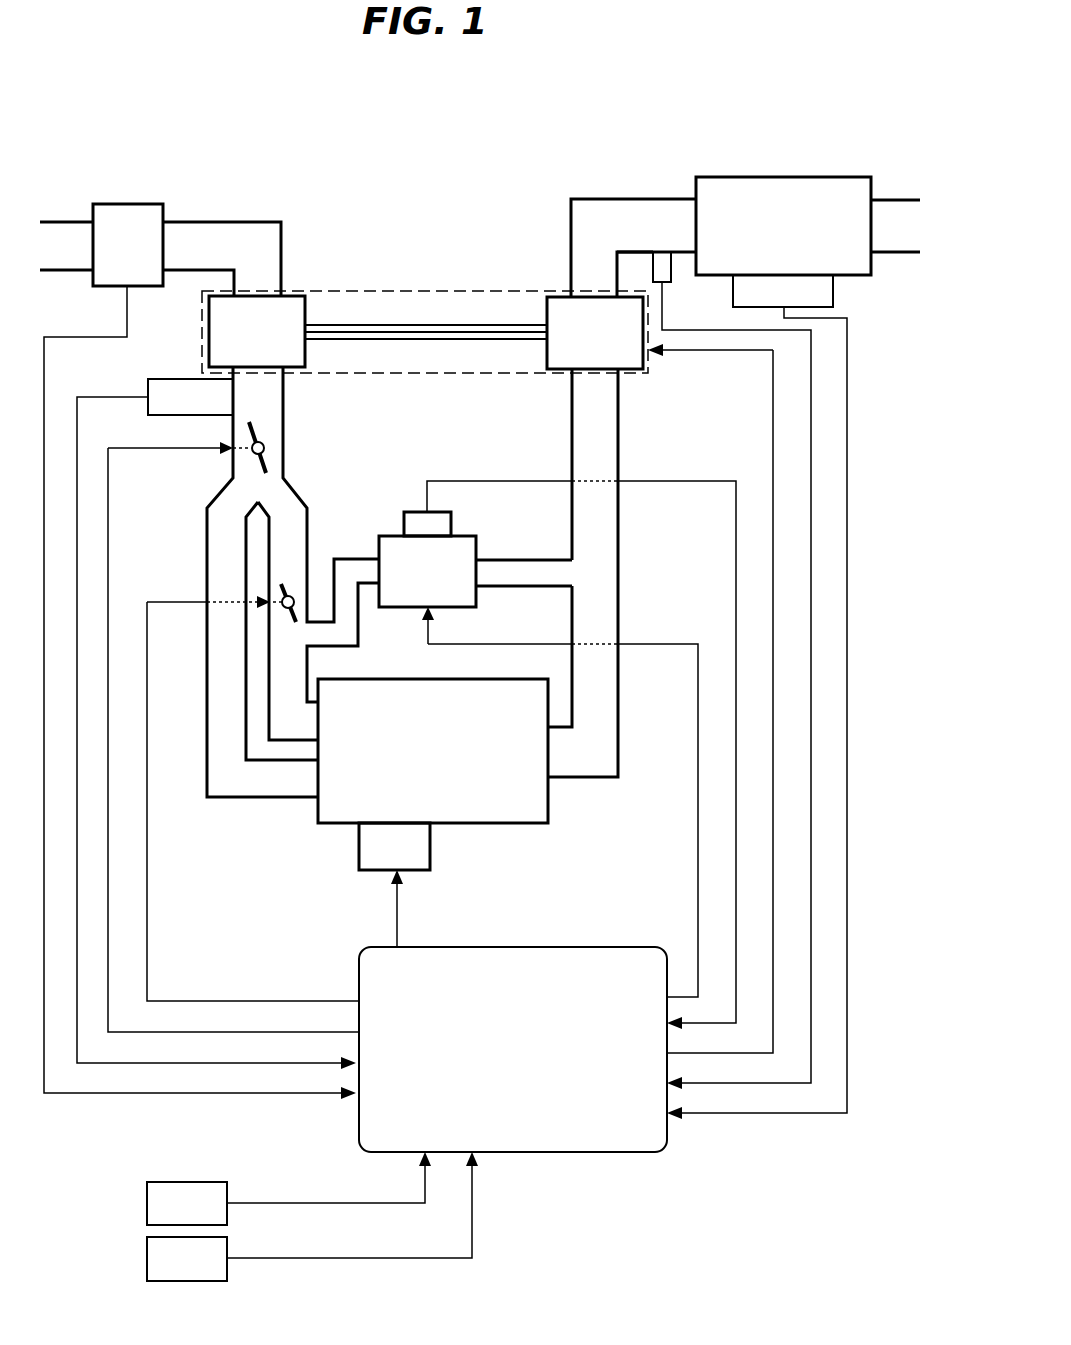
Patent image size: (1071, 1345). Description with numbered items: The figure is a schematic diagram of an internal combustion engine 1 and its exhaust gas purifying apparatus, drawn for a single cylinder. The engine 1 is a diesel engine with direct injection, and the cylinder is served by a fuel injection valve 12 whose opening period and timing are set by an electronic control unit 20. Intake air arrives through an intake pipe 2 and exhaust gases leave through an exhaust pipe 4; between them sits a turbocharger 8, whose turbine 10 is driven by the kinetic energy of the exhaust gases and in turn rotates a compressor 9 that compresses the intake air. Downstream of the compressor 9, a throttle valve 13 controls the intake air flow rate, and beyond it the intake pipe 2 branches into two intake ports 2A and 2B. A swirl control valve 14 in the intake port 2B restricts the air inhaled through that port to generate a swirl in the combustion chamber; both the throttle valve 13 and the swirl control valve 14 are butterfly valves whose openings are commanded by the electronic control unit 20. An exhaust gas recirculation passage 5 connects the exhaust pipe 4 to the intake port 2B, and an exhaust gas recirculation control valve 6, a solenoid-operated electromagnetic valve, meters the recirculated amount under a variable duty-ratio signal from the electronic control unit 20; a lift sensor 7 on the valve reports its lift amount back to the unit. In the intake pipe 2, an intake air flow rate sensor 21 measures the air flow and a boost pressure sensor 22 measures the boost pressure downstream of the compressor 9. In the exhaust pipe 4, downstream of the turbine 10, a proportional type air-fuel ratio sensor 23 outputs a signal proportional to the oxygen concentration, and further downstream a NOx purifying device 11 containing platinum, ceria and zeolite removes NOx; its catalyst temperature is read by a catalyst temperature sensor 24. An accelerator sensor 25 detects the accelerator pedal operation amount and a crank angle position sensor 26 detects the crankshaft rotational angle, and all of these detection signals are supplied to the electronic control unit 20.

The internal combustion engine 1 is at (448, 679).
The intake pipe 2 is at (235, 222).
The intake port 2A is at (262, 797).
The intake port 2B is at (308, 660).
The exhaust pipe 4 is at (620, 420).
The exhaust gas recirculation passage 5 is at (496, 558).
The exhaust gas recirculation control valve 6 is at (379, 536).
The lift sensor 7 is at (416, 512).
The turbocharger 8 is at (335, 289).
The compressor 9 is at (307, 308).
The turbine 10 is at (560, 297).
The NOx purifying device 11 is at (706, 177).
The fuel injection valve 12 is at (410, 870).
The throttle valve 13 is at (264, 457).
The swirl control valve 14 is at (285, 586).
The electronic control unit 20 is at (575, 947).
The intake air flow rate sensor 21 is at (128, 204).
The boost pressure sensor 22 is at (148, 388).
The proportional type air-fuel ratio sensor 23 is at (668, 285).
The catalyst temperature sensor 24 is at (833, 290).
The accelerator sensor 25 is at (147, 1200).
The crank angle position sensor 26 is at (147, 1255).